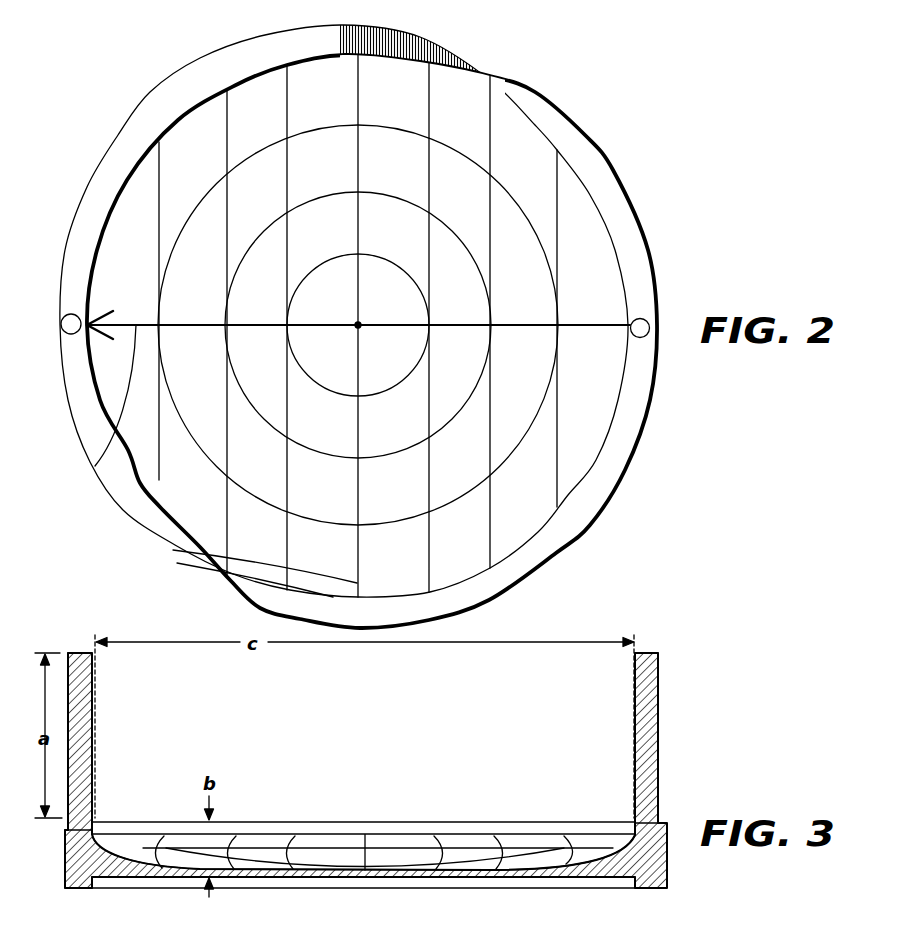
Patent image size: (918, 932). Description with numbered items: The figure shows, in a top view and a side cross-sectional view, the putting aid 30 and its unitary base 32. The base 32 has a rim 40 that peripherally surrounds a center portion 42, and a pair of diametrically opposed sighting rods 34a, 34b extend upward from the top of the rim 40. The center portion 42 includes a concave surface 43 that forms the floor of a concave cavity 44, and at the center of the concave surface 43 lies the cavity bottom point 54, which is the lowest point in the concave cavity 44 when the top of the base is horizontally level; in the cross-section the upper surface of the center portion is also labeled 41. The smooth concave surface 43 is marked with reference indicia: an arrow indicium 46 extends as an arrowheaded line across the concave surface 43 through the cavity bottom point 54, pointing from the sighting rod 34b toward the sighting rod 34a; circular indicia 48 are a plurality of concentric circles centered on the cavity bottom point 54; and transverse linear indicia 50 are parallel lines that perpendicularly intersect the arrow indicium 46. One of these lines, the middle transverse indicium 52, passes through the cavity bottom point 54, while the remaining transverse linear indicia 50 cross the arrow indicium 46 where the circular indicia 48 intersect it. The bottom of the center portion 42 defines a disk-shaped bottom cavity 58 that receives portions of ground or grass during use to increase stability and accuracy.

In FIG. 2, the putting aid 30 is at (68, 133).
In FIG. 3, the putting aid 30 is at (695, 712).
In FIG. 2, the unitary base 32 is at (540, 86).
In FIG. 3, the unitary base 32 is at (58, 870).
In FIG. 2, the sighting rod 34a is at (62, 324).
In FIG. 3, the sighting rod 34a is at (82, 652).
In FIG. 2, the sighting rod 34b is at (642, 318).
In FIG. 3, the sighting rod 34b is at (655, 652).
In FIG. 3, the rim 40 is at (67, 830).
In FIG. 3, the upper surface of bottom wall 41 is at (128, 848).
In FIG. 2, the center portion 42 is at (577, 210).
In FIG. 2, the concave surface 43 is at (580, 247).
In FIG. 2, the concave cavity 44 is at (592, 292).
In FIG. 3, the concave cavity 44 is at (406, 842).
In FIG. 2, the arrow indicium 46 is at (95, 466).
In FIG. 2, the circular indicia 48 is at (320, 243).
In FIG. 2, the transverse linear indicia 50 is at (290, 556).
In FIG. 2, the middle transverse indicium 52 is at (358, 102).
In FIG. 2, the cavity bottom point 54 is at (358, 325).
In FIG. 3, the bottom cavity 58 is at (587, 887).